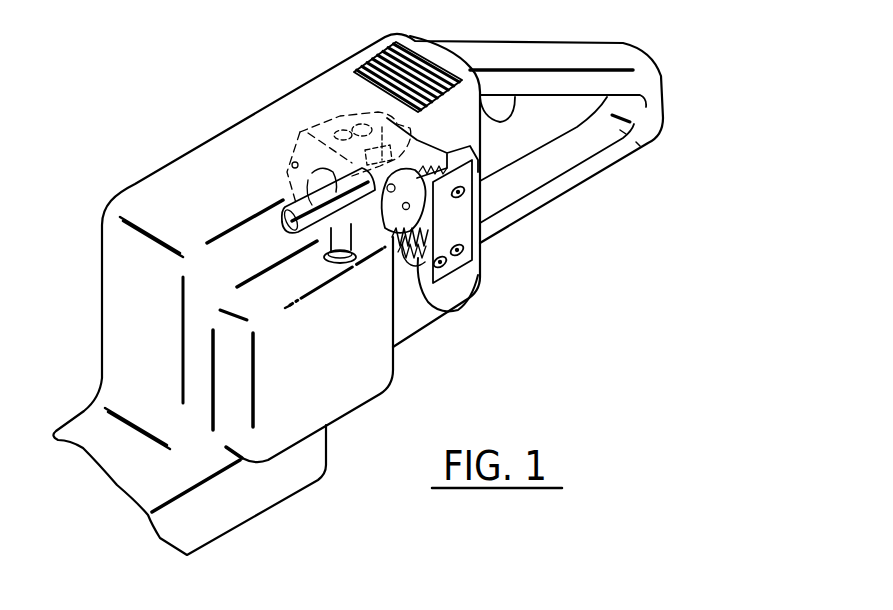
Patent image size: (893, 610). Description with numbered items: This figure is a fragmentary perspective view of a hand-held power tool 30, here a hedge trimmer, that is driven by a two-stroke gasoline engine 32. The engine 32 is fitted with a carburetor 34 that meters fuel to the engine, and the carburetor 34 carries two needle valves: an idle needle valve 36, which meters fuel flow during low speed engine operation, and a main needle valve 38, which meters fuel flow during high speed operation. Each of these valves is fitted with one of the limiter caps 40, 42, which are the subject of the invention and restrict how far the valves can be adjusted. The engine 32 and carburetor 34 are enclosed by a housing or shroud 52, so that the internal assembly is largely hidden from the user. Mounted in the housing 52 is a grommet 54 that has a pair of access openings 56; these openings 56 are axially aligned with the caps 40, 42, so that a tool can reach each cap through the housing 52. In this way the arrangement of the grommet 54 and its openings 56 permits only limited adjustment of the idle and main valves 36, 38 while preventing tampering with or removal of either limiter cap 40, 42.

The hand-held power tool 30 is at (100, 166).
The two-stroke gasoline engine 32 is at (303, 326).
The carburetor 34 is at (452, 127).
The idle needle valve 36 is at (369, 241).
The main needle valve 38 is at (435, 187).
The limiter cap 40 is at (425, 305).
The limiter cap 42 is at (436, 229).
The housing or shroud 52 is at (218, 155).
The grommet 54 is at (472, 183).
The access openings 56 is at (461, 247).